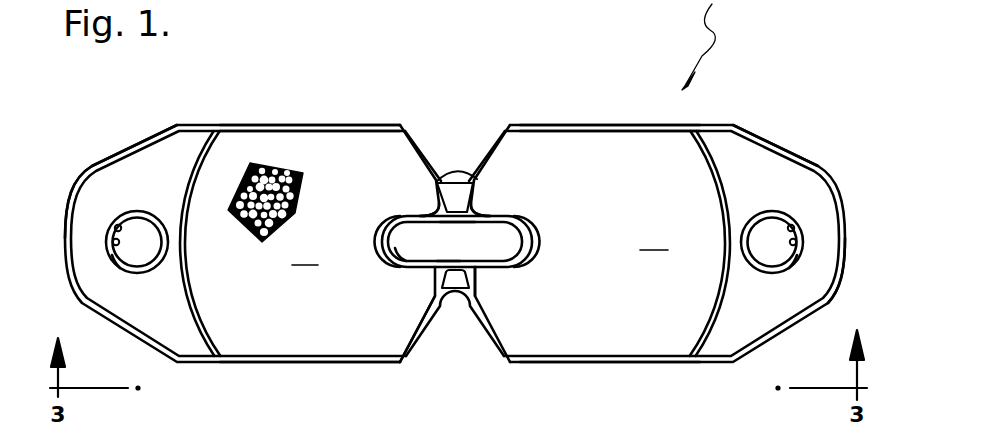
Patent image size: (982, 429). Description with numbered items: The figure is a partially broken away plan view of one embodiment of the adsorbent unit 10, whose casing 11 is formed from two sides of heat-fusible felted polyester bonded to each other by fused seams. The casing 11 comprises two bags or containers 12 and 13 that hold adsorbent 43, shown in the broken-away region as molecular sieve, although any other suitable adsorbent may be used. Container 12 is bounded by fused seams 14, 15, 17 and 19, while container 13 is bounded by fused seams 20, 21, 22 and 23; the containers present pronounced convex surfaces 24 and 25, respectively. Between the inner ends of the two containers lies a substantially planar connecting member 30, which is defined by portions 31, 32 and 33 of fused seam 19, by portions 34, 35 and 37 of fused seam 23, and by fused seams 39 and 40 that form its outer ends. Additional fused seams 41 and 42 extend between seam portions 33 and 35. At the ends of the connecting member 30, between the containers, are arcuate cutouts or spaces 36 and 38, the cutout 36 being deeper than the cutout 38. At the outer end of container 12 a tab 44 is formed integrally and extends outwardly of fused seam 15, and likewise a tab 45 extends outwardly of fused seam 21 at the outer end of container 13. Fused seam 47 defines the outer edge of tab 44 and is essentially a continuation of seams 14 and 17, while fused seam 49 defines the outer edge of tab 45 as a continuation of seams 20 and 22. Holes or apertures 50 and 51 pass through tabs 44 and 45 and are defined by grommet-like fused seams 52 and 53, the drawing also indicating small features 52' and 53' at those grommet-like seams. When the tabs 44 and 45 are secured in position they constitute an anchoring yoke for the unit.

The container 10 is at (698, 45).
The casing 11 is at (640, 125).
The container 12 is at (555, 145).
The container 13 is at (355, 150).
The fused seam 14 is at (605, 130).
The fused seam 15 is at (719, 305).
The fused seam 17 is at (615, 365).
The fused seam 19 is at (534, 241).
The fused seam 20 is at (282, 125).
The fused seam 21 is at (183, 180).
The fused seam 22 is at (270, 364).
The fused seam 23 is at (395, 268).
The pronounced convex surface 24 is at (654, 239).
The pronounced convex surface 25 is at (305, 251).
The connecting member 30 is at (456, 224).
The portion of fused seam 19 31 is at (480, 283).
The portion of fused seam 19 32 is at (480, 198).
The portion of fused seam 19 33 is at (528, 260).
The portion of fused seam 23 34 is at (435, 282).
The portion of fused seam 23 35 is at (382, 237).
The arcuate cutout 36 is at (443, 318).
The portion of fused seam 23 37 is at (433, 199).
The arcuate cutout 38 is at (473, 163).
The fused seam 39 is at (462, 313).
The fused seam 40 is at (445, 178).
The fused seam 41 is at (467, 226).
The fused seam 42 is at (447, 259).
The adsorbent 43 is at (238, 226).
The tab 44 is at (803, 185).
The tab 45 is at (110, 172).
The fused seam 47 is at (846, 290).
The fused seam 49 is at (83, 180).
The hole 50 is at (802, 230).
The hole 51 is at (108, 232).
The grommet-like fused seam 52 is at (839, 260).
The right hole notch 52' is at (840, 233).
The grommet-like fused seam 53 is at (73, 269).
The left hole notch 53' is at (74, 238).